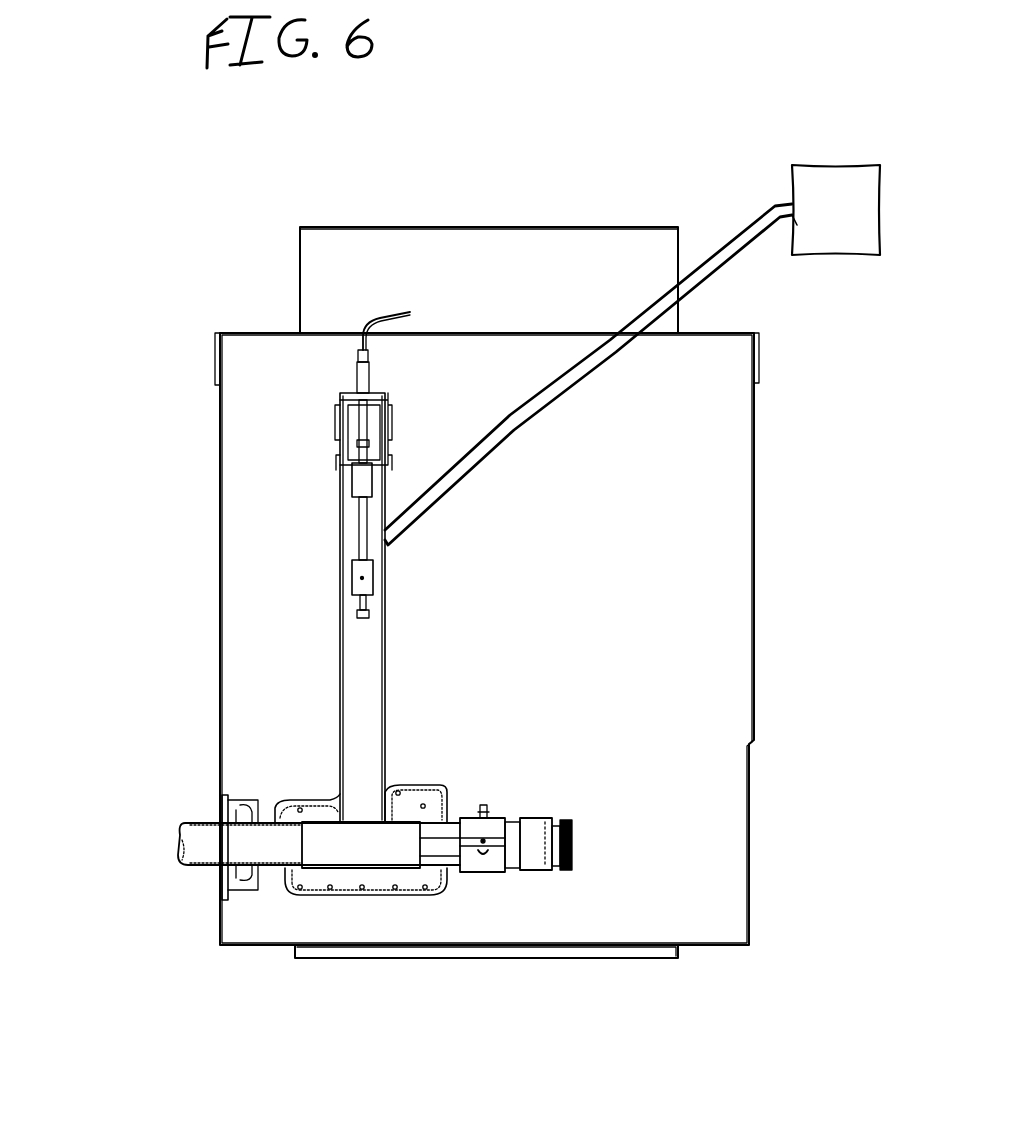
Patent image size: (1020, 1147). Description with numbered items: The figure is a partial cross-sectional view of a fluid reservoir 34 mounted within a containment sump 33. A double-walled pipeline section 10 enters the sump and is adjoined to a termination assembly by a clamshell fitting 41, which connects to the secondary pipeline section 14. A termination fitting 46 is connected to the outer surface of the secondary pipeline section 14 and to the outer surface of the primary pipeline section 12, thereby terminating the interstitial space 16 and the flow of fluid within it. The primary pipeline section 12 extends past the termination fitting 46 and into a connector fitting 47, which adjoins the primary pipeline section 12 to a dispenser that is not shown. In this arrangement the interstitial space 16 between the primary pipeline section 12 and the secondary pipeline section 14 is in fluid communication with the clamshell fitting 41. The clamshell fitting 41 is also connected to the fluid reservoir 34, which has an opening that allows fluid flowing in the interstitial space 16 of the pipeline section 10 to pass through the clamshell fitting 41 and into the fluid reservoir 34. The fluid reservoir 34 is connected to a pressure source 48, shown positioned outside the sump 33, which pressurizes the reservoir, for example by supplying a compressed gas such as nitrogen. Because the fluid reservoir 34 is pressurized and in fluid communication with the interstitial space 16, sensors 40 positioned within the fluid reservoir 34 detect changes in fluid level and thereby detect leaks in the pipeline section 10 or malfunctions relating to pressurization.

The pipeline section 10 is at (130, 800).
The primary pipeline section 12 is at (322, 810).
The secondary pipeline section 14 is at (212, 870).
The interstitial space 16 is at (308, 886).
The sump 33 is at (832, 510).
The fluid reservoir 34 is at (357, 657).
The sensors 40 is at (107, 492).
The clamshell fitting 41 is at (547, 745).
The termination fitting 46 is at (632, 745).
The connector fitting 47 is at (667, 787).
The pressure source 48 is at (848, 308).